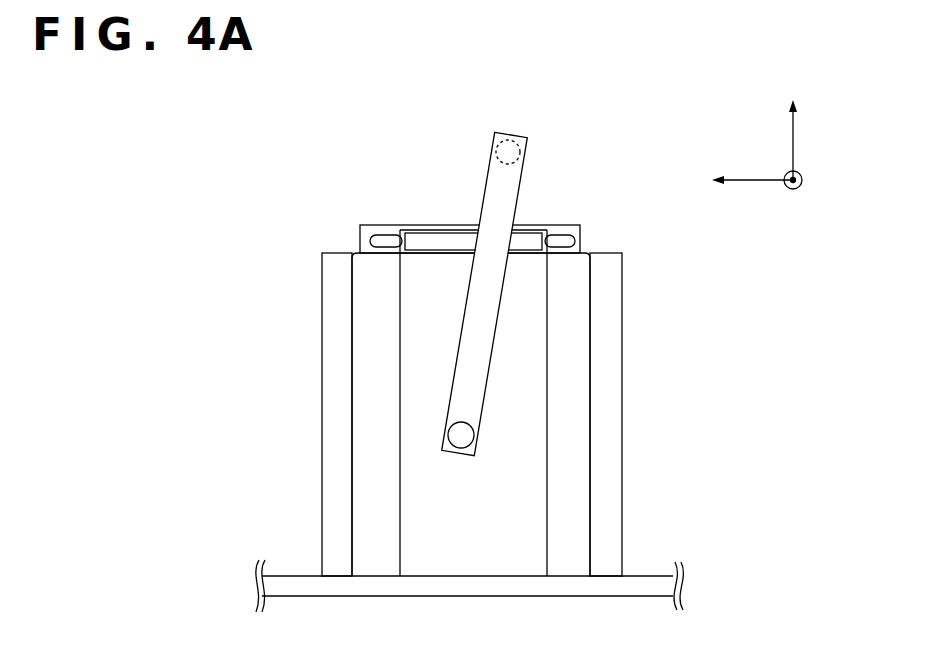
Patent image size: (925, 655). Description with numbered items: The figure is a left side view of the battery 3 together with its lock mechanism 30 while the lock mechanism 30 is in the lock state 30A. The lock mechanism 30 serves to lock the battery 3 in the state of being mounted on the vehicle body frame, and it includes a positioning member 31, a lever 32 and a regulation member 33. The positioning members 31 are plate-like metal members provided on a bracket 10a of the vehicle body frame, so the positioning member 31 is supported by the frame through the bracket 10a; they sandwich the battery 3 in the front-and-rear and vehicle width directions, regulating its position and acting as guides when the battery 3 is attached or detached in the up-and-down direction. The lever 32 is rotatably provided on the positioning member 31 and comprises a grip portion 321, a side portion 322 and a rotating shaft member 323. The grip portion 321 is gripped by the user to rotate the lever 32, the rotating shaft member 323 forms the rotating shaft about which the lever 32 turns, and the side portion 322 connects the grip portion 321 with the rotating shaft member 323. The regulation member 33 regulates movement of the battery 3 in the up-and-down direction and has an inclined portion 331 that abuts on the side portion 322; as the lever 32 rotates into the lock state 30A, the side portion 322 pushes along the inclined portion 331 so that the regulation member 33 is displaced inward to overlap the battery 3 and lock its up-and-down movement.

The battery 3 is at (355, 253).
The bracket 10a is at (286, 575).
The lock mechanism 30 is at (316, 72).
The lock state 30A is at (497, 641).
The positioning member 31 is at (322, 318).
The lever 32 is at (478, 124).
The regulation member 33 is at (530, 230).
The grip portion 321 is at (527, 147).
The side portion 322 is at (488, 177).
The rotating shaft member 323 is at (467, 438).
The inclined portion 331 is at (447, 231).